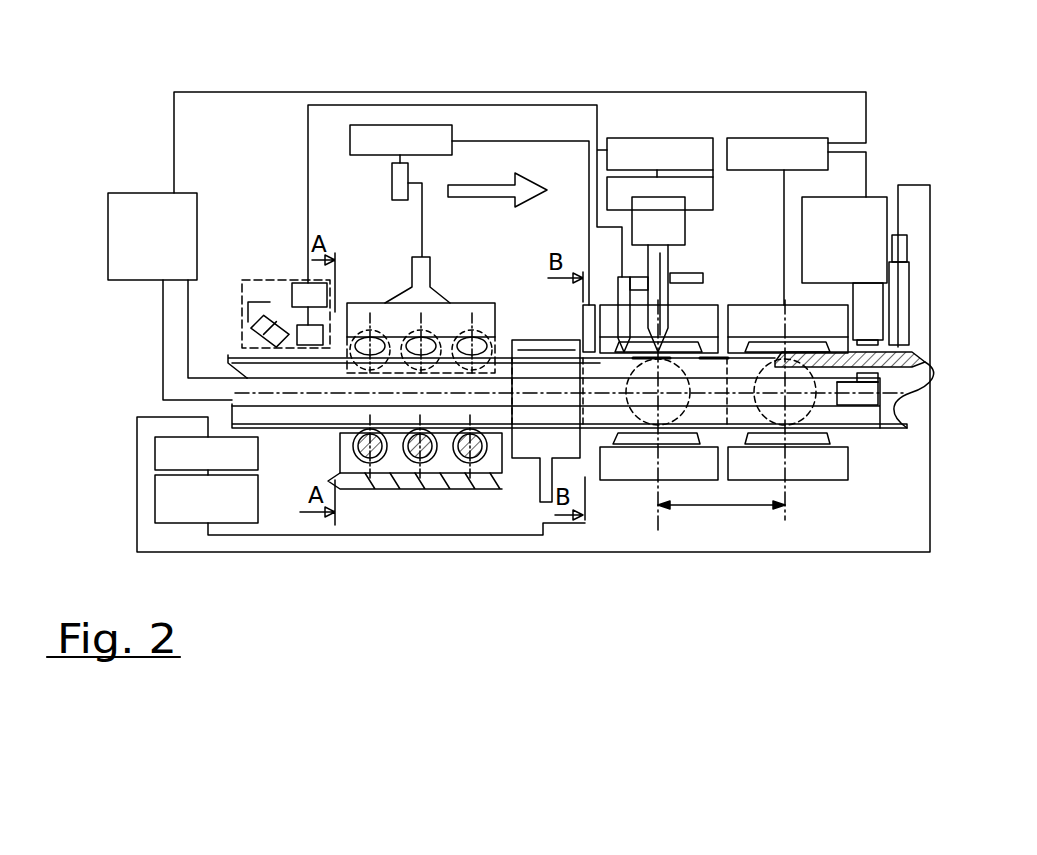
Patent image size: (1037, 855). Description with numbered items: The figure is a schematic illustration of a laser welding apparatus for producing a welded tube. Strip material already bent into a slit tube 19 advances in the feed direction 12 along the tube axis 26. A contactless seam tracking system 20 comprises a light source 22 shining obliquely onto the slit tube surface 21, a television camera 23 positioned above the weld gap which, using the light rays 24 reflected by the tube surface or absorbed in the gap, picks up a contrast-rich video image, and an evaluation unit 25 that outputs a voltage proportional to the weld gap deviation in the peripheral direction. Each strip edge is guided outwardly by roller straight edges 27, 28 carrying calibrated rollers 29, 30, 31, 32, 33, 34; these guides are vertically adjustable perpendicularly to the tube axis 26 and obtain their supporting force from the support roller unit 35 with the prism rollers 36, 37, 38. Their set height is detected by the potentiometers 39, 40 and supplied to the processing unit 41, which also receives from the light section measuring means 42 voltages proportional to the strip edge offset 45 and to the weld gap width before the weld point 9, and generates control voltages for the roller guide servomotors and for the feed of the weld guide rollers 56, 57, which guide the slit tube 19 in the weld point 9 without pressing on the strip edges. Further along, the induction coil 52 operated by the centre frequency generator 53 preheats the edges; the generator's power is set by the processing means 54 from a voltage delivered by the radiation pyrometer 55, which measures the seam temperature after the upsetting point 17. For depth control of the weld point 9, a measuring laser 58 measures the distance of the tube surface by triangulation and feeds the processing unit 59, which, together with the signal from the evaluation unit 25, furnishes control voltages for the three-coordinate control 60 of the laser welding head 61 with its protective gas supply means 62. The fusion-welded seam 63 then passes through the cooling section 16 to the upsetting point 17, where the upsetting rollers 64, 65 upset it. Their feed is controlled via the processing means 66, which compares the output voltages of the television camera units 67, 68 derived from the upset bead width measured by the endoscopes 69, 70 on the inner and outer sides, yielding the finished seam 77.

The weld point 9 is at (668, 430).
The feed direction 12 is at (485, 190).
The cooling section 16 is at (790, 447).
The upsetting point 17 is at (818, 433).
The slit tube 19 is at (258, 414).
The seam tracking system 20 is at (238, 295).
The slit tube surface 21 is at (312, 338).
The light source 22 is at (262, 327).
The television camera 23 is at (260, 407).
The light rays 24 is at (176, 93).
The evaluation unit 25 is at (305, 291).
The tube axis 26 is at (920, 395).
The roller straight edge 27 is at (386, 205).
The roller straight edge 28 is at (378, 310).
The calibrated roller 29 is at (282, 462).
The calibrated roller 30 is at (382, 462).
The calibrated roller 31 is at (466, 462).
The calibrated roller 32 is at (358, 352).
The calibrated roller 33 is at (422, 352).
The calibrated roller 34 is at (473, 352).
The support roller unit 35 is at (493, 472).
The prism roller 36 is at (363, 462).
The prism roller 37 is at (430, 457).
The prism roller 38 is at (488, 463).
The potentiometer 39 is at (399, 170).
The potentiometer 40 is at (400, 183).
The processing unit 41 is at (415, 142).
The light section measuring means 42 is at (590, 335).
The strip edge offset 45 is at (250, 356).
The induction coil 52 is at (570, 450).
The centre frequency generator 53 is at (197, 508).
The processing means 54 is at (200, 453).
The radiation pyrometer 55 is at (900, 277).
The weld guide roller 56 is at (745, 484).
The weld guide roller 57 is at (713, 360).
The measuring laser 58 is at (623, 318).
The processing unit 59 is at (617, 157).
The three-coordinate control 60 is at (647, 190).
The laser welding head 61 is at (660, 290).
The protective gas supply means 62 is at (692, 278).
The fusion-welded seam 63 is at (768, 505).
The upsetting roller 64 is at (921, 456).
The upsetting roller 65 is at (830, 447).
The processing means 66 is at (755, 157).
The television camera unit 67 is at (150, 240).
The television camera unit 68 is at (863, 228).
The endoscope 69 is at (870, 400).
The endoscope 70 is at (868, 323).
The seam 77 is at (873, 359).